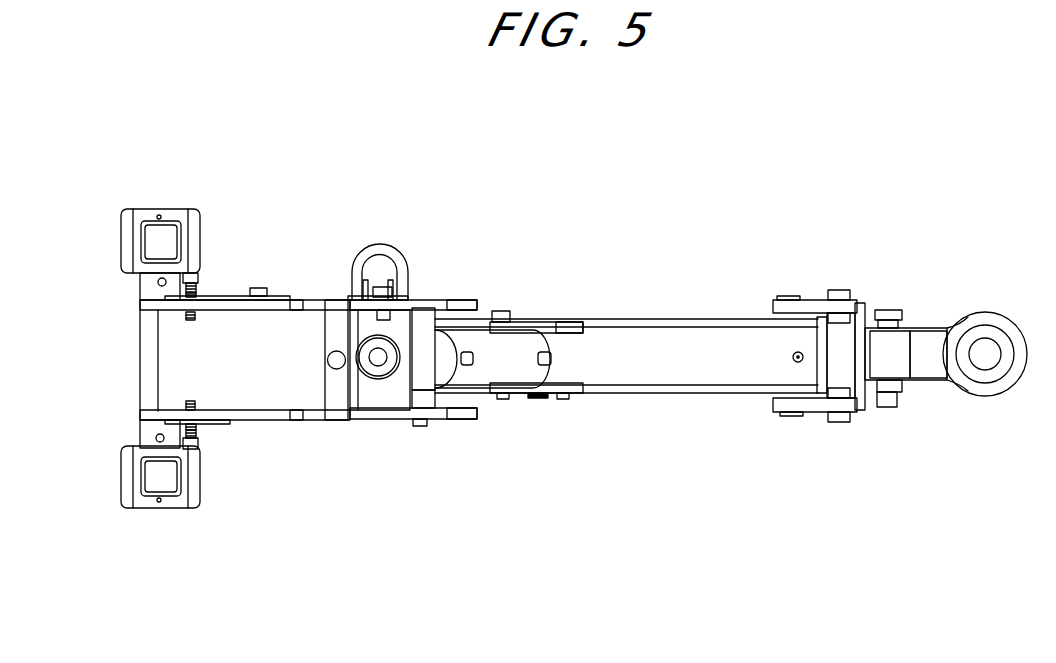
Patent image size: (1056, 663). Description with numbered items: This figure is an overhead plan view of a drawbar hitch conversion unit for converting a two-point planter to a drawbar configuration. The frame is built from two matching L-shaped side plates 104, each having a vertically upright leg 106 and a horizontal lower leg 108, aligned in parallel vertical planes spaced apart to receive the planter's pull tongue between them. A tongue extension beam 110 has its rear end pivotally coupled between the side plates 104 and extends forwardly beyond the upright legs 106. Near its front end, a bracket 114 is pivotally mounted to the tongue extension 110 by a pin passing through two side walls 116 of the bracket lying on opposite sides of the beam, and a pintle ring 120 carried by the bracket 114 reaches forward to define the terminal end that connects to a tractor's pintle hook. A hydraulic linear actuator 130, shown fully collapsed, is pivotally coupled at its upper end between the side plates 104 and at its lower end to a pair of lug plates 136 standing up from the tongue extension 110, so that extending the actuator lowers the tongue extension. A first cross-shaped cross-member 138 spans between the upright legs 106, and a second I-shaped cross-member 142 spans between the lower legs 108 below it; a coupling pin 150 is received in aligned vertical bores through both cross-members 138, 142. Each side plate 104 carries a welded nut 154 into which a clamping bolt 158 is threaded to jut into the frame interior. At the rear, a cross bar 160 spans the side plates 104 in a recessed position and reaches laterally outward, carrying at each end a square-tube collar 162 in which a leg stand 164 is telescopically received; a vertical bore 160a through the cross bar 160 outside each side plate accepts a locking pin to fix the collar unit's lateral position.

The side plate 104 is at (276, 302).
The upright leg 106 is at (436, 300).
The lower leg 108 is at (238, 302).
The tongue extension beam 110 is at (674, 342).
The bracket 114 is at (860, 302).
The side wall 116 is at (810, 306).
The pintle ring 120 is at (993, 325).
The hydraulic linear actuator 130 is at (513, 350).
The lug plate 136 is at (553, 328).
The first plate-shaped cross-member 138 is at (392, 402).
The second plate-shaped cross-member 142 is at (203, 360).
The coupling pin 150 is at (379, 360).
The nut 154 is at (188, 293).
The clamping bolt 158 is at (199, 278).
The cross bar 160 is at (150, 431).
The vertical bore 160a is at (157, 279).
The collar 162 is at (150, 225).
The leg stand 164 is at (167, 238).